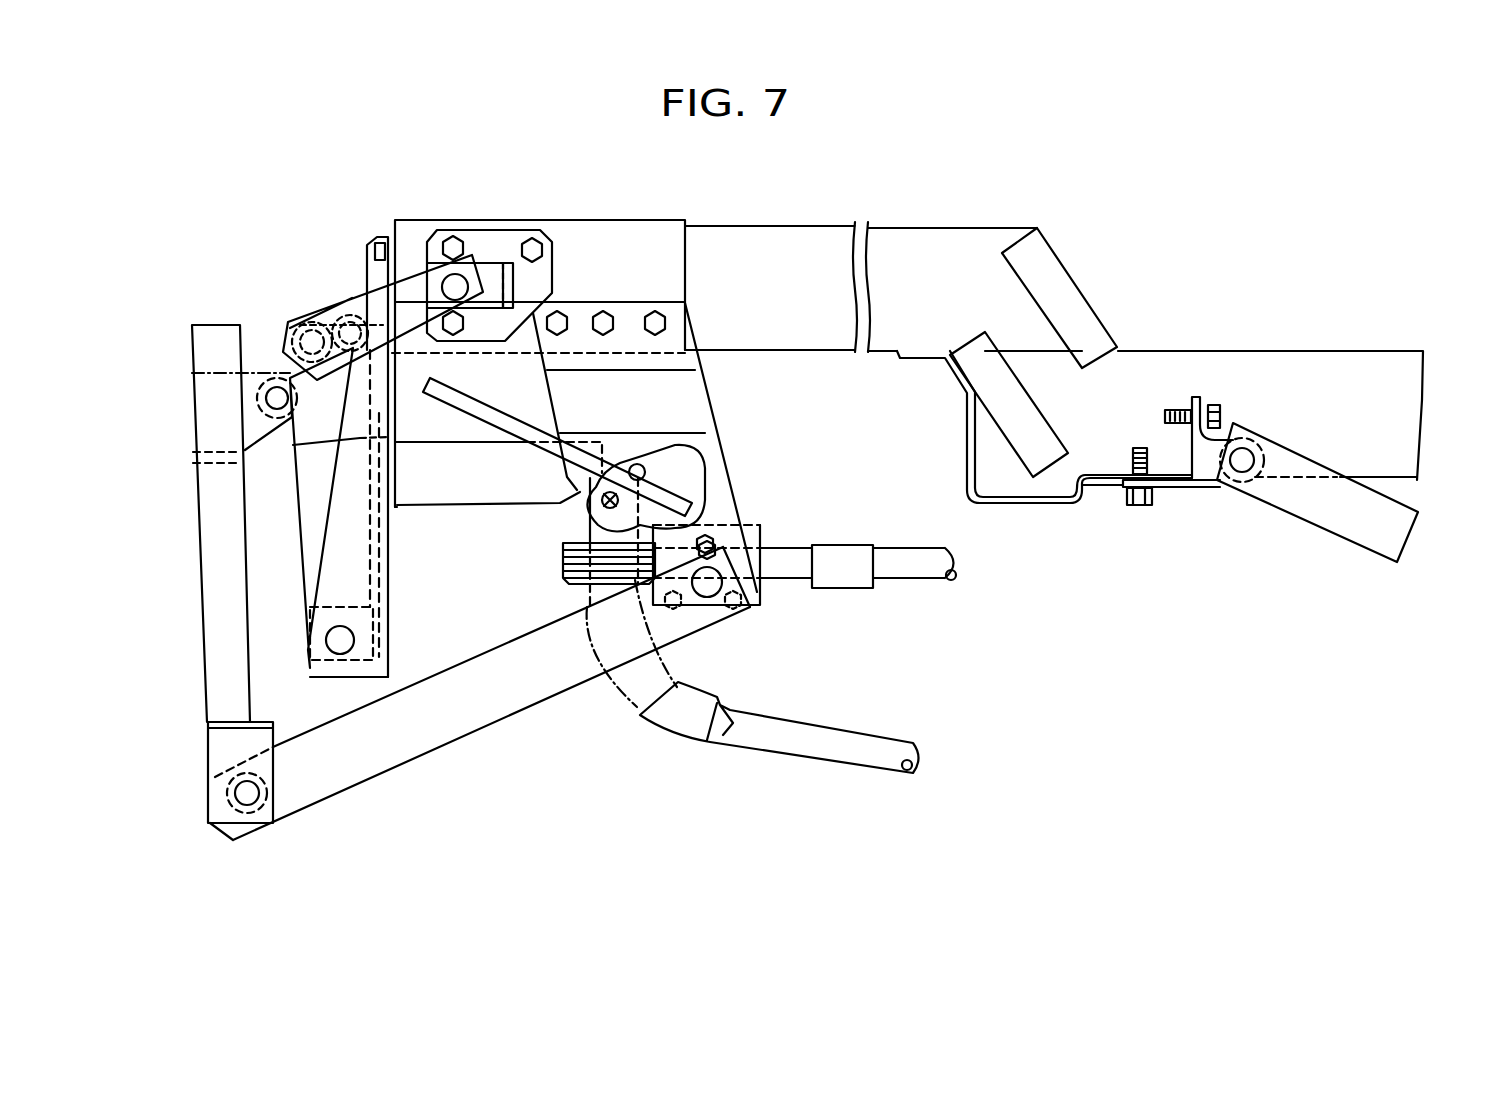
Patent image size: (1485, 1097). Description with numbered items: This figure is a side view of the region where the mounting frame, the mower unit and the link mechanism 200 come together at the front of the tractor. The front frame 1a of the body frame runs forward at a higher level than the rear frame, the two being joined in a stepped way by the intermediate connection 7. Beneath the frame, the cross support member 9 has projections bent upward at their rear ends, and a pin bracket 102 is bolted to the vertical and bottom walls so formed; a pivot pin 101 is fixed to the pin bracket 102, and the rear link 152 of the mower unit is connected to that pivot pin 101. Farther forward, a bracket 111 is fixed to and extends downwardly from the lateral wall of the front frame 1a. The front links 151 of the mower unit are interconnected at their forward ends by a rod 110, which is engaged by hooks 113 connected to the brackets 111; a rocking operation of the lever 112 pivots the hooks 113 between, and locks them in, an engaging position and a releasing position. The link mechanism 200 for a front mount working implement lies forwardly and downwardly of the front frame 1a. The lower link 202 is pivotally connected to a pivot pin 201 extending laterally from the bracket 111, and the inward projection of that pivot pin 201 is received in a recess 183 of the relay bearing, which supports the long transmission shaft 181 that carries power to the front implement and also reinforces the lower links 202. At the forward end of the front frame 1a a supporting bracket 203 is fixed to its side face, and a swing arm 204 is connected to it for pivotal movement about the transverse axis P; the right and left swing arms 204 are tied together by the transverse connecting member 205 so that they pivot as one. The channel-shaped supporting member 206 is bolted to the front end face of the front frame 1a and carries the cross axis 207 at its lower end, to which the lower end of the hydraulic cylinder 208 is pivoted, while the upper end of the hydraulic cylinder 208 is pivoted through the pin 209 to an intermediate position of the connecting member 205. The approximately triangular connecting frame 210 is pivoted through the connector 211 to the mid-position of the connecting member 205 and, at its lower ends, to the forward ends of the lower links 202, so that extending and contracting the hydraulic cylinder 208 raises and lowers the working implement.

The front frame 1a is at (807, 232).
The intermediate connection 7 is at (1099, 284).
The cross support member 9 is at (1068, 507).
The pin bracket 102 is at (1223, 485).
The pivot pin 101 is at (1242, 462).
The rear link 152 is at (1350, 523).
The supporting bracket 203 is at (513, 236).
The swing arm 204 is at (398, 280).
The transverse axis P is at (452, 285).
The transverse connecting member 205 is at (288, 322).
The connector 211 is at (317, 323).
The pin 209 is at (280, 340).
The channel-shaped supporting member 206 is at (390, 605).
The hydraulic cylinder 208 is at (298, 528).
The cross axis 207 is at (338, 642).
The connecting frame 210 is at (208, 635).
The lower link 202 is at (493, 707).
The link mechanism 200 is at (454, 752).
The pivot pin 201 is at (707, 587).
The recess 183 is at (750, 527).
The transmission shaft 181 is at (925, 570).
The front link 151 is at (770, 737).
The bracket 111 is at (697, 403).
The lever 112 is at (465, 398).
The rod 110 is at (598, 498).
The hook 113 is at (585, 528).